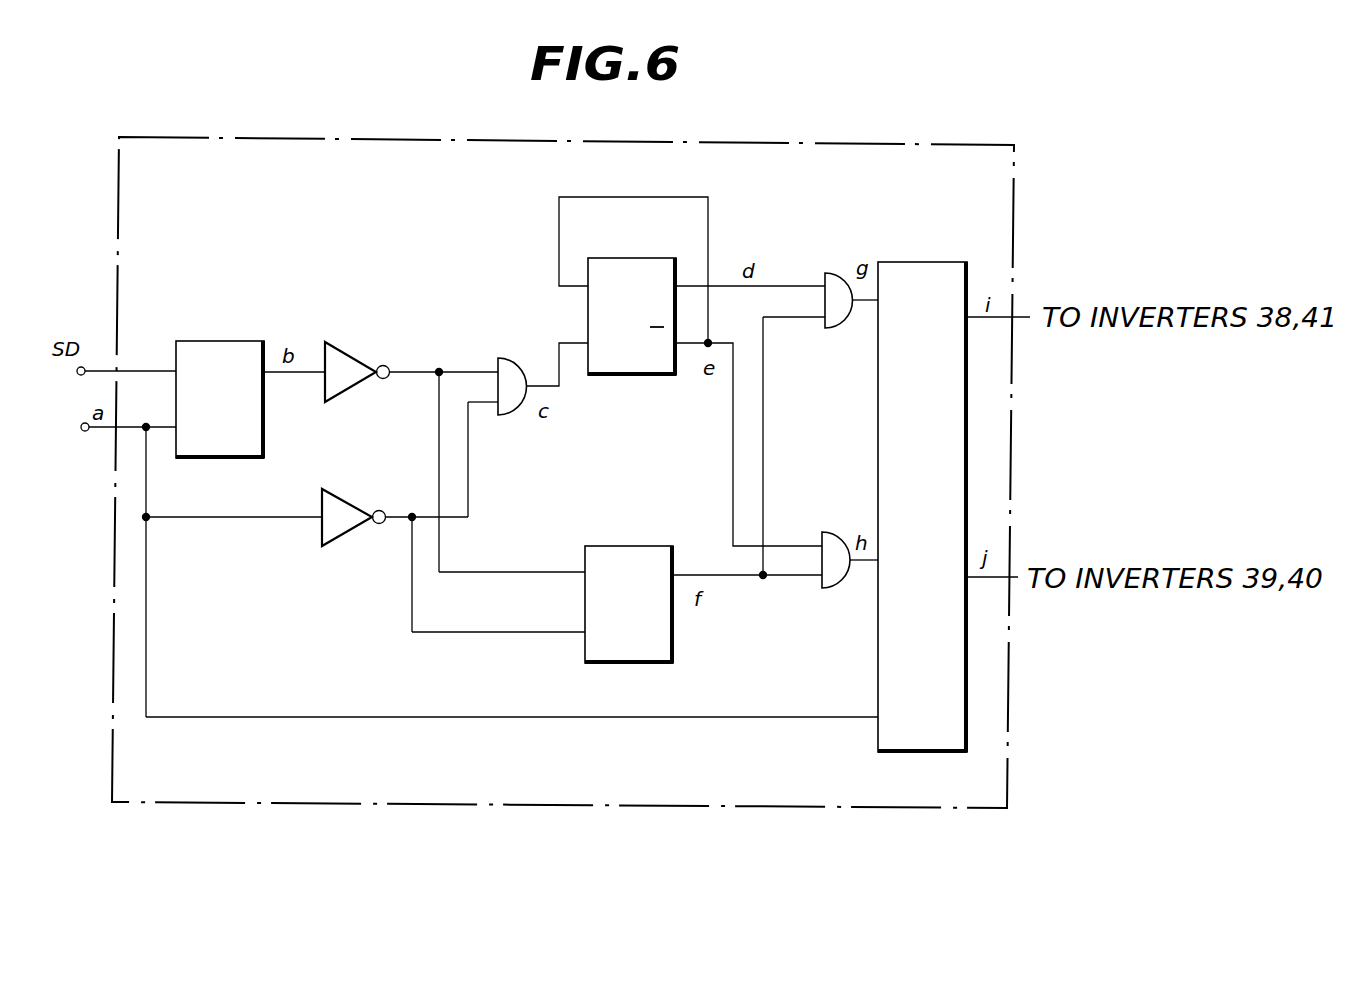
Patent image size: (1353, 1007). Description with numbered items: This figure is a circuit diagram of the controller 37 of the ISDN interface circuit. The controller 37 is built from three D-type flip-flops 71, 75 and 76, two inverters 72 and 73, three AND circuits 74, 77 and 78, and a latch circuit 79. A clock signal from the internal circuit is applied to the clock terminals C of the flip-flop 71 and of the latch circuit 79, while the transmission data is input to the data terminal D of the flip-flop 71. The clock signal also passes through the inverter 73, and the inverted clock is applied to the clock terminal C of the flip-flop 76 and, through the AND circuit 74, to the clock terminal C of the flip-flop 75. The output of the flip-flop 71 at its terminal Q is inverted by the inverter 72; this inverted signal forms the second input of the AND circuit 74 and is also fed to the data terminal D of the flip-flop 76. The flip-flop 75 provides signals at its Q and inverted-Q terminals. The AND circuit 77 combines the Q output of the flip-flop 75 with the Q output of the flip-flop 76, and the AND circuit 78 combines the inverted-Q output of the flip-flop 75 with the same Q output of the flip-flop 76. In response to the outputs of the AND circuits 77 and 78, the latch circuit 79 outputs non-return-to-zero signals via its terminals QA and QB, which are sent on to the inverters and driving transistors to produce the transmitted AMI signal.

The controller 37 is at (1013, 223).
The D-type flip-flop 71 is at (208, 341).
The inverter 72 is at (351, 355).
The inverter 73 is at (349, 503).
The AND circuit 74 is at (503, 357).
The D-type flip-flop 75 is at (627, 258).
The D-type flip-flop 76 is at (630, 546).
The AND circuit 77 is at (837, 273).
The AND circuit 78 is at (835, 532).
The latch circuit 79 is at (930, 262).